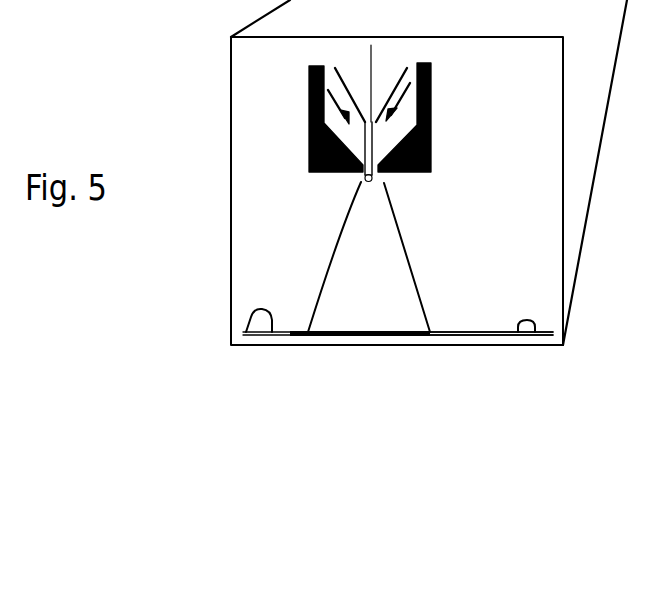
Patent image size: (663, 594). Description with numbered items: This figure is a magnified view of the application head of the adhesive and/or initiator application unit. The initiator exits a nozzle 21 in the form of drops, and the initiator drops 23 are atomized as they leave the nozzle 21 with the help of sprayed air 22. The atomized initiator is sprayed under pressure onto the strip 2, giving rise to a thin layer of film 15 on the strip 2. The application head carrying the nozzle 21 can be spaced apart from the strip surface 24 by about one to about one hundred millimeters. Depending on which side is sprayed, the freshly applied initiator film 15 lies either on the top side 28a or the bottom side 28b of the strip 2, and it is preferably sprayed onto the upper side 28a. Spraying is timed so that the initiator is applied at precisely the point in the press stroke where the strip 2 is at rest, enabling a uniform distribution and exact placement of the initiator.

The strip 2 is at (460, 333).
The layer of film 15 is at (357, 333).
The nozzle 21 is at (364, 140).
The sprayed air 22 is at (332, 93).
The initiator drops 23 is at (365, 182).
The strip surface 24 is at (533, 333).
The top side 28a is at (247, 333).
The bottom side 28b is at (287, 336).